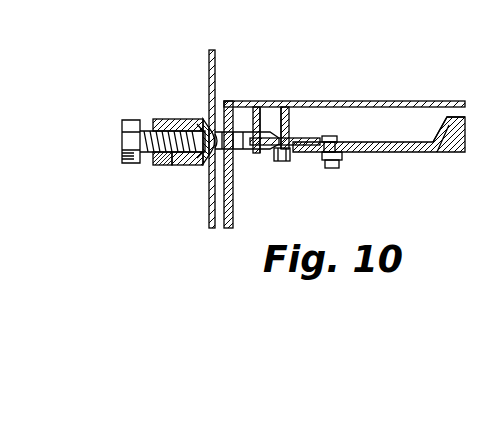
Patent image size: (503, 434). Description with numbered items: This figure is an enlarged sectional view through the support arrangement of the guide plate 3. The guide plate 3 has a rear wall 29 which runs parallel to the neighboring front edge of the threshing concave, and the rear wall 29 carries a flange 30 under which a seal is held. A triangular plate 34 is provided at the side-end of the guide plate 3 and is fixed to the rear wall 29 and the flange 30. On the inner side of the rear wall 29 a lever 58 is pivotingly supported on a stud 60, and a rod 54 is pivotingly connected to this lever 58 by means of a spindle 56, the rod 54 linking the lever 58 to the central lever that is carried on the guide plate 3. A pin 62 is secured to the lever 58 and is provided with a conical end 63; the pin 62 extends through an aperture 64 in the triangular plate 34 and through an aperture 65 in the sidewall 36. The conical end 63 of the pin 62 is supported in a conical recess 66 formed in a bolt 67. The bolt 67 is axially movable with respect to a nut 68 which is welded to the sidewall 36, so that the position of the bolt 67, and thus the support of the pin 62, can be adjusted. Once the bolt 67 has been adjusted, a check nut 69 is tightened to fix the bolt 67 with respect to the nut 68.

The guide plate 3 is at (423, 90).
The rear wall 29 is at (324, 100).
The flange 30 is at (370, 117).
The triangular plate 34 is at (233, 208).
The sidewall 36 is at (209, 70).
The rod 54 is at (445, 152).
The spindle 56 is at (329, 169).
The lever 58 is at (347, 135).
The stud 60 is at (272, 163).
The pin 62 is at (247, 152).
The conical end 63 is at (212, 166).
The aperture 64 is at (245, 106).
The aperture 65 is at (211, 121).
The conical recess 66 is at (198, 165).
The bolt 67 is at (123, 141).
The nut 68 is at (186, 119).
The check nut 69 is at (158, 166).